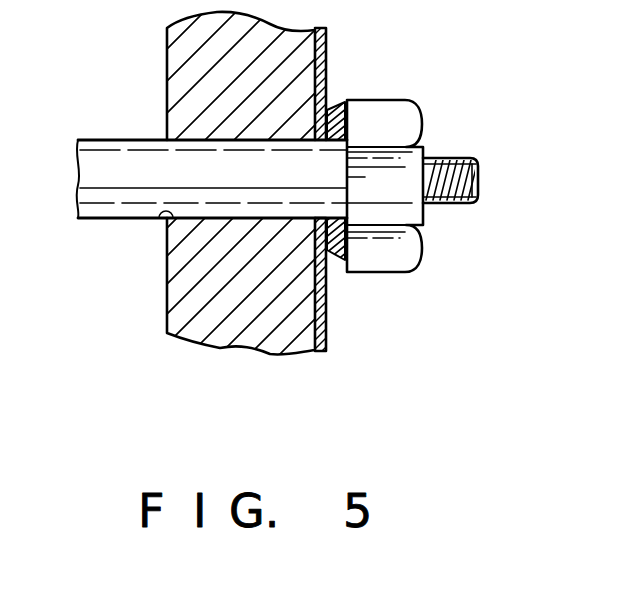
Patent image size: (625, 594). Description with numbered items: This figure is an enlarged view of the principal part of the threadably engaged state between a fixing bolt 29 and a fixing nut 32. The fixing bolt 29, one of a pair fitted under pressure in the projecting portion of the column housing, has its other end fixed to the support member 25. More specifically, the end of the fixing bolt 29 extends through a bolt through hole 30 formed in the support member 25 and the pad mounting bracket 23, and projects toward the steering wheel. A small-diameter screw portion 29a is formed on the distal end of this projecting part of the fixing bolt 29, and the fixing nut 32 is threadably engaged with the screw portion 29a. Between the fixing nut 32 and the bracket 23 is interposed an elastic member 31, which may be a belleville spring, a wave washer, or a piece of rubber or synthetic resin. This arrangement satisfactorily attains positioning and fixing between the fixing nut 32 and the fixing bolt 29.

The pad mounting bracket 23 is at (326, 310).
The support member 25 is at (177, 92).
The fixing bolt 29 is at (112, 208).
The small-diameter screw portion 29a is at (452, 172).
The bolt through hole 30 is at (162, 212).
The elastic member 31 is at (338, 108).
The fixing nut 32 is at (403, 108).